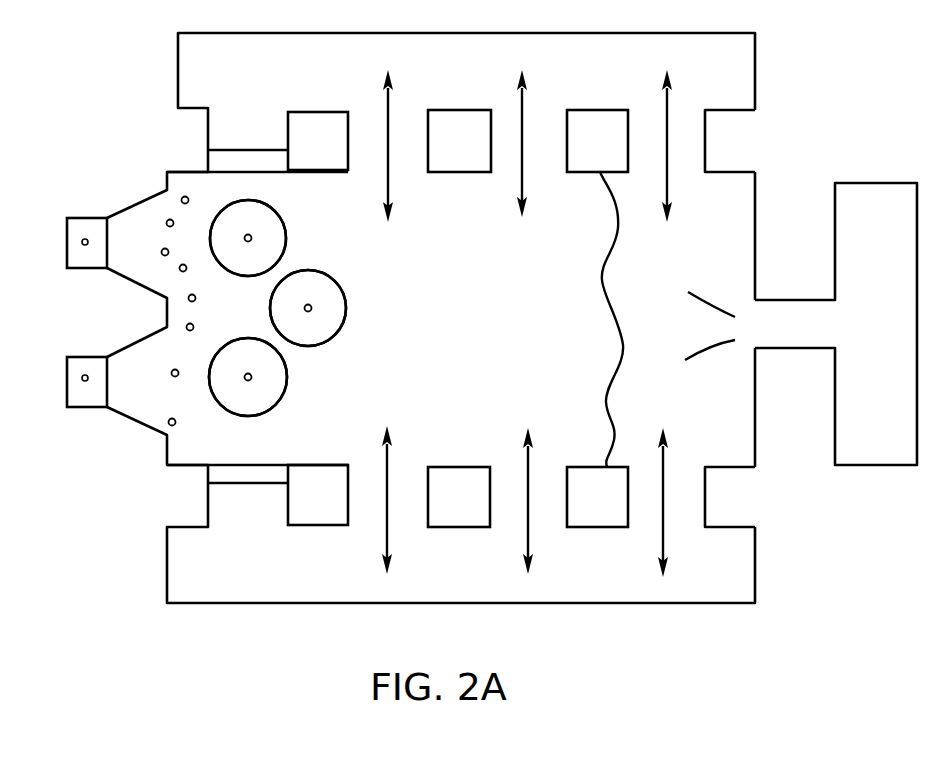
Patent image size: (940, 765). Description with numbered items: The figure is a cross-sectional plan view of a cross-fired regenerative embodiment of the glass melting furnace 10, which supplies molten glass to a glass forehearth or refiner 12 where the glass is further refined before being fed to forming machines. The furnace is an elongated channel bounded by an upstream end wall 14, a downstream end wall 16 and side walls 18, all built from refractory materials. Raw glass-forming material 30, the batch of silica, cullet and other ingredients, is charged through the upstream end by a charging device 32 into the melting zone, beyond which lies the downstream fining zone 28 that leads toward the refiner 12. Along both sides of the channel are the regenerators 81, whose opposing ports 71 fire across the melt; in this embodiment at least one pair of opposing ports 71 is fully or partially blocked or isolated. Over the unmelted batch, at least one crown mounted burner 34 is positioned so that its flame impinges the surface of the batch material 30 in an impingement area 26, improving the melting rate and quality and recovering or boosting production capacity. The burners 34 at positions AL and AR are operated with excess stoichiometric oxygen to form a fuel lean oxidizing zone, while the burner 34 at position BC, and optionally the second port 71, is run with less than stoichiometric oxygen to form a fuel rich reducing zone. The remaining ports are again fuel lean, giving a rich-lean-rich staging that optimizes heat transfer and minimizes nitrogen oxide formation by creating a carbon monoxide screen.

The glass melting furnace 10 is at (127, 180).
The glass forehearth or refiner 12 is at (892, 339).
The upstream end wall 14 is at (166, 455).
The downstream end wall 16 is at (755, 452).
The side walls 18 is at (730, 172).
The impingement area 26 is at (286, 240).
The fining zone 28 is at (696, 341).
The raw glass-forming material 30 is at (228, 329).
The charging device 32 is at (67, 245).
The crown mounted burner 34 is at (252, 236).
The opposing ports 71 is at (207, 157).
The regenerators 81 is at (323, 86).
The AL burner position AL is at (241, 277).
The AR burner position AR is at (256, 414).
The BC burner position BC is at (334, 284).